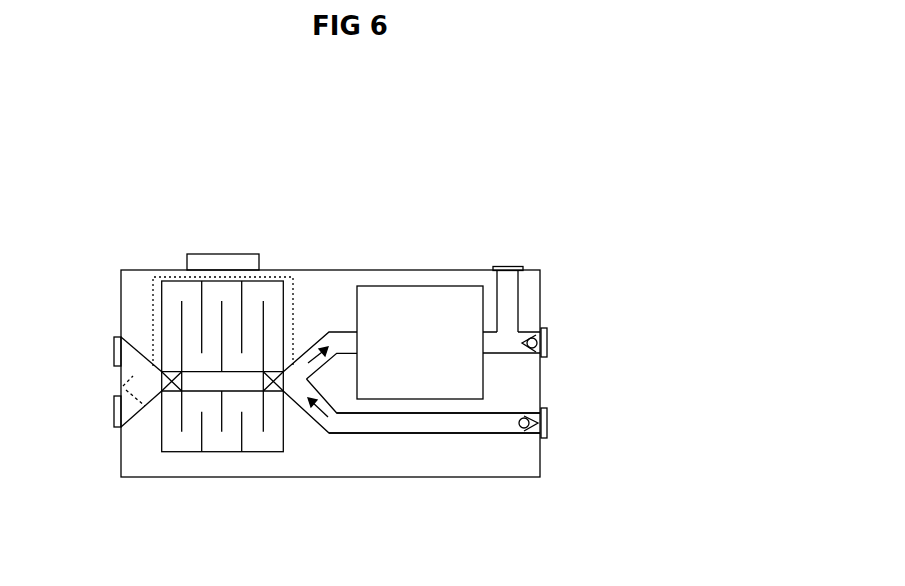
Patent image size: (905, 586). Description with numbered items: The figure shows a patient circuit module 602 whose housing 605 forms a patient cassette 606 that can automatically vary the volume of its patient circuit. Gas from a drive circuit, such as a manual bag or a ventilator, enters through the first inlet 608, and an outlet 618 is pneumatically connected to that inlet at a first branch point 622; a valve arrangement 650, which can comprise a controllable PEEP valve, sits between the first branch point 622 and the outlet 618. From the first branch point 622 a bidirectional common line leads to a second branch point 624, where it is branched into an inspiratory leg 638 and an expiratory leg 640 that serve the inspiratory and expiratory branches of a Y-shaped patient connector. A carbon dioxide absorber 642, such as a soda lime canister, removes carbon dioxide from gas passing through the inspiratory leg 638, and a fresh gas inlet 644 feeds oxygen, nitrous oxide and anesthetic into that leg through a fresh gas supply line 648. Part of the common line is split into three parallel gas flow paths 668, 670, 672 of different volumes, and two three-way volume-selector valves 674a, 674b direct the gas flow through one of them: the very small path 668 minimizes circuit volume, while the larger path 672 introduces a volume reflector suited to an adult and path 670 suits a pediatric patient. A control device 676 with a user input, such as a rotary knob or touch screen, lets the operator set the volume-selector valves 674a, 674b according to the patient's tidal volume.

The patient circuit module 602 is at (505, 160).
The housing 605 is at (495, 477).
The patient cassette 606 is at (372, 465).
The first inlet 608 is at (114, 345).
The outlet 618 is at (114, 417).
The first branch point 622 is at (147, 382).
The second branch point 624 is at (304, 383).
The inspiratory leg 638 is at (492, 332).
The expiratory leg 640 is at (403, 433).
The carbon dioxide absorber 642 is at (437, 350).
The fresh gas inlet 644 is at (512, 266).
The fresh gas supply line 648 is at (519, 306).
The valve arrangement 650 is at (147, 404).
The gas flow path 668 is at (205, 395).
The gas flow path 670 is at (217, 424).
The gas flow path 672 is at (178, 283).
The volume-selector valve 674a is at (176, 393).
The volume-selector valve 674b is at (276, 372).
The control device 676 is at (260, 258).